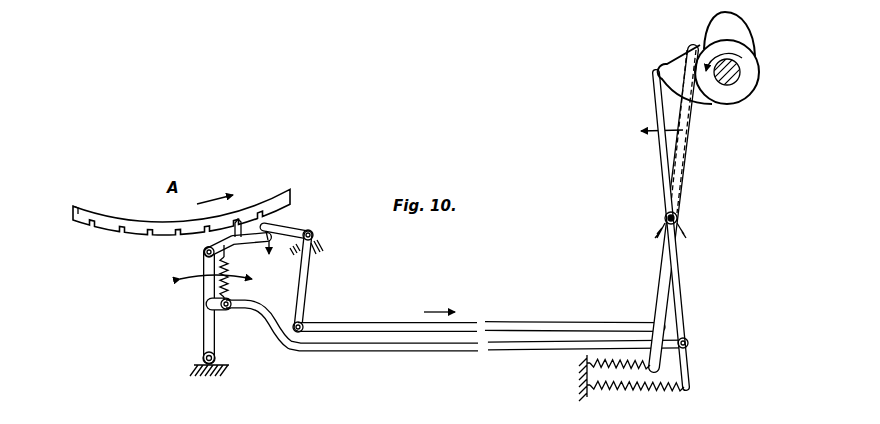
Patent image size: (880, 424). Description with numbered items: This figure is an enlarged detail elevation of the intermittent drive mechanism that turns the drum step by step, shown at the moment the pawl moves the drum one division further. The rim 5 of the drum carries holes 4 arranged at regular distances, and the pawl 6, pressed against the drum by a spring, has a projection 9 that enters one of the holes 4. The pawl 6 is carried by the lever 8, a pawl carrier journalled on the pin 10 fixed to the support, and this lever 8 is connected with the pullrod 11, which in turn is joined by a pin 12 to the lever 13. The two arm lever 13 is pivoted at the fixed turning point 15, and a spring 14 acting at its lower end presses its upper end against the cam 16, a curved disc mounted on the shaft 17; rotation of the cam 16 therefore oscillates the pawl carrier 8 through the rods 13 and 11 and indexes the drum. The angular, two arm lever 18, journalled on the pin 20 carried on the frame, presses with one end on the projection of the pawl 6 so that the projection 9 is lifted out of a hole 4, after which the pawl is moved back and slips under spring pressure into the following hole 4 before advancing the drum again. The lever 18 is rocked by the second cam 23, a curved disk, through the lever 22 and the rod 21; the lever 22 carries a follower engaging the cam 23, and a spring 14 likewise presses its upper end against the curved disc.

The holes 4 is at (122, 223).
The rim 5 is at (79, 212).
The pawl 6 is at (243, 247).
The lever 8 is at (206, 285).
The projection 9 is at (240, 219).
The pin 10 is at (216, 357).
The pullrod 11 is at (389, 347).
The pin 12 is at (691, 343).
The lever 13 is at (664, 167).
The spring 14 is at (630, 381).
The pivot 15 is at (680, 217).
The cam 16 is at (679, 62).
The shaft 17 is at (742, 72).
The angular lever 18 is at (289, 227).
The pin 20 is at (313, 233).
The rod 21 is at (377, 322).
The lever 22 is at (681, 160).
The second cam 23 is at (733, 28).